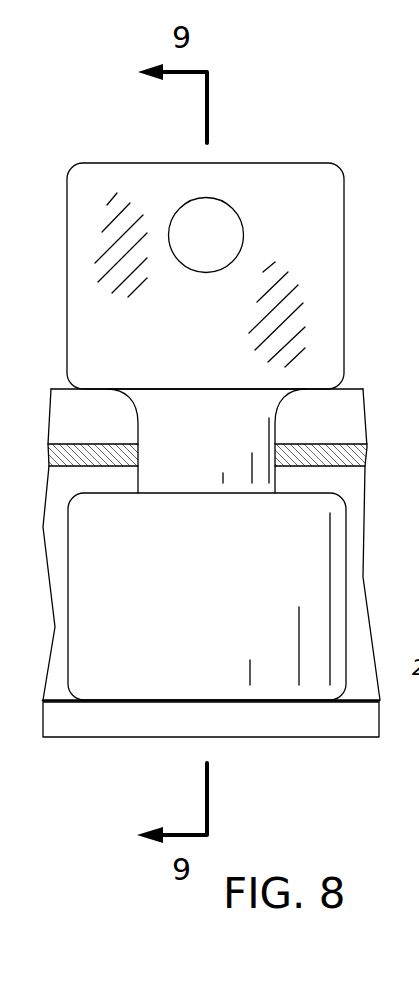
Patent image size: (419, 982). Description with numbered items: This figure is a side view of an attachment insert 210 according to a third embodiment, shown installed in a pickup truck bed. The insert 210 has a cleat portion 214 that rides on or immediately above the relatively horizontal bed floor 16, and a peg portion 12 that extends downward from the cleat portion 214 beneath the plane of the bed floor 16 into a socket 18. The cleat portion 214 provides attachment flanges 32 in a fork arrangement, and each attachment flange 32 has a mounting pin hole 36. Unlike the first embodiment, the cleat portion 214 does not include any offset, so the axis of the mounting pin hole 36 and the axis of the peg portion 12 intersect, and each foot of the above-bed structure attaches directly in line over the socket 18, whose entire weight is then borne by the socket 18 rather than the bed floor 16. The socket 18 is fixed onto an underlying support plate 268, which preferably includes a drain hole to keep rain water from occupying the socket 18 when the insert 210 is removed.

The insert 210 is at (252, 142).
The cleat portion 214 is at (130, 160).
The attachment flange 32 is at (103, 180).
The mounting pin hole 36 is at (233, 218).
The bed floor 16 is at (342, 402).
The peg portion 12 is at (272, 431).
The socket 18 is at (350, 602).
The support plate 268 is at (267, 735).